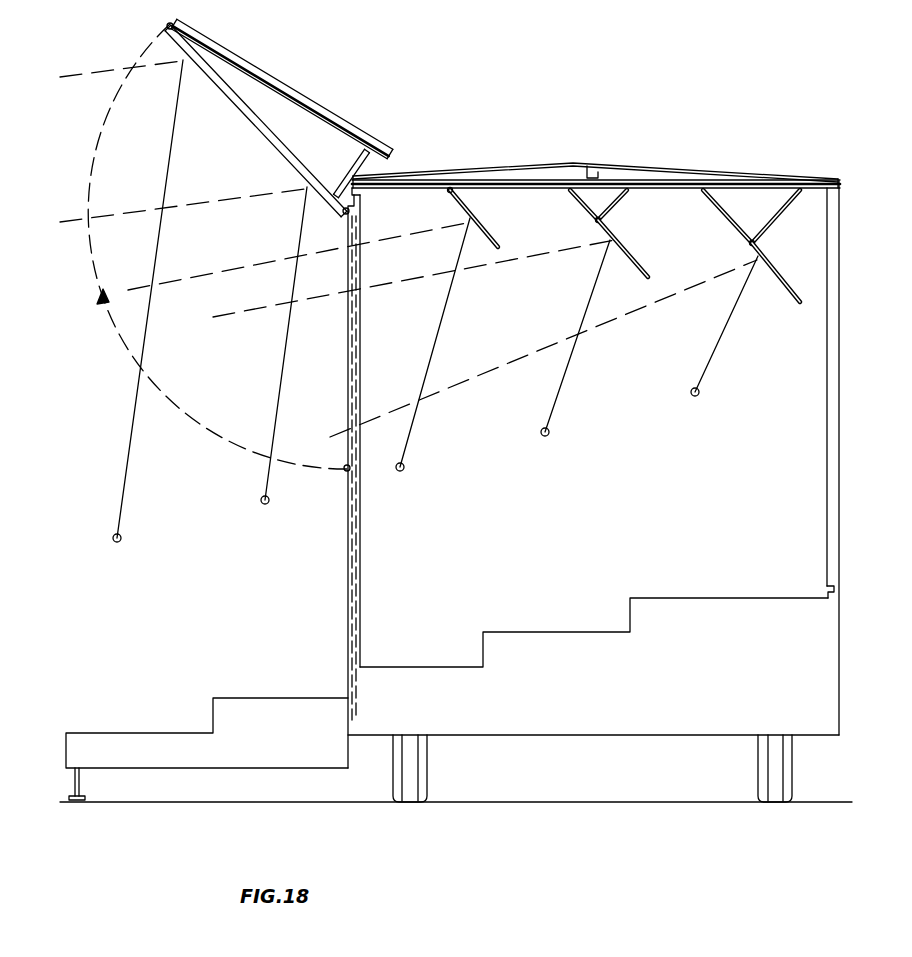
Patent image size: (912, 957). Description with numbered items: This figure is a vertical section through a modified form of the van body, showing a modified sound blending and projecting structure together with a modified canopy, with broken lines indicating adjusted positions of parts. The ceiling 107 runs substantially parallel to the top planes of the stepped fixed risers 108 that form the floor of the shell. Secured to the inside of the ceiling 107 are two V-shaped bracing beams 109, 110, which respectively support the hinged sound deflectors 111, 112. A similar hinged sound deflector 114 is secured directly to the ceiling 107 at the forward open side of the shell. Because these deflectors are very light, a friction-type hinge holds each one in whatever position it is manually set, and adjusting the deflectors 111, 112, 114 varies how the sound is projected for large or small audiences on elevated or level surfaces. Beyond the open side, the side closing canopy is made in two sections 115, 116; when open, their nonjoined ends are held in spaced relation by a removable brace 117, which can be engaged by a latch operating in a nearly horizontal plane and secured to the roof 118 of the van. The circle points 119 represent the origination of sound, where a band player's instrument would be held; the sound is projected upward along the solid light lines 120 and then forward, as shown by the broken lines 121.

The ceiling 107 is at (661, 186).
The fixed risers 108 is at (559, 632).
The V-shaped beam 109 is at (613, 206).
The V-shaped beam 110 is at (725, 212).
The hinged sound deflector 111 is at (641, 271).
The hinged sound deflector 112 is at (770, 268).
The hinged sound deflector 114 is at (478, 226).
The canopy section 115 is at (257, 135).
The canopy section 116 is at (308, 104).
The removable brace 117 is at (352, 161).
The roof 118 is at (513, 166).
The circle points 119 is at (122, 542).
The pull cords 120 is at (438, 326).
The broken lines 121 is at (274, 306).